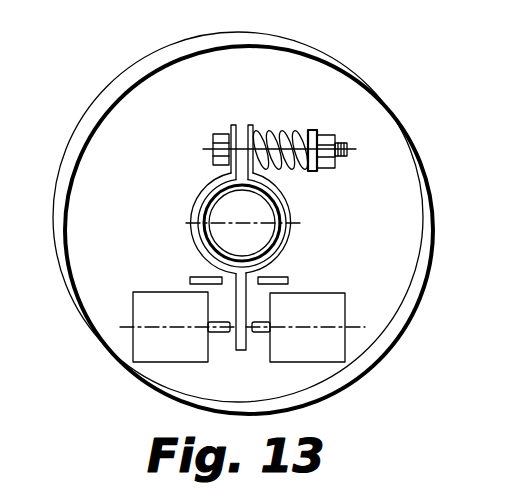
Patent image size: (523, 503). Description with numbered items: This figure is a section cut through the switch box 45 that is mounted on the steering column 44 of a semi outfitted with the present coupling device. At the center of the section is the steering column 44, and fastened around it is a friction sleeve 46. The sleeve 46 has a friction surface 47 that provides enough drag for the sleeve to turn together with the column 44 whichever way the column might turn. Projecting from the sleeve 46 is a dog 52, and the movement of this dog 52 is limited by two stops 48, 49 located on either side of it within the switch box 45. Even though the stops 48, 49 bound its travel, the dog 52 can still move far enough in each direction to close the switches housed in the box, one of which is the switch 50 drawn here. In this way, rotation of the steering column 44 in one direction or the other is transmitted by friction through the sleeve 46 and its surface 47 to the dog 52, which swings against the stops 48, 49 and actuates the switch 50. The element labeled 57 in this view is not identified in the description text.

The steering column 44 is at (214, 209).
The switch box 45 is at (61, 281).
The friction sleeve 46 is at (290, 246).
The friction surface 47 is at (296, 206).
The stop 48 is at (289, 277).
The stop 49 is at (190, 277).
The switch 50 is at (330, 353).
The dog 52 is at (236, 352).
The left motor 57 is at (153, 300).